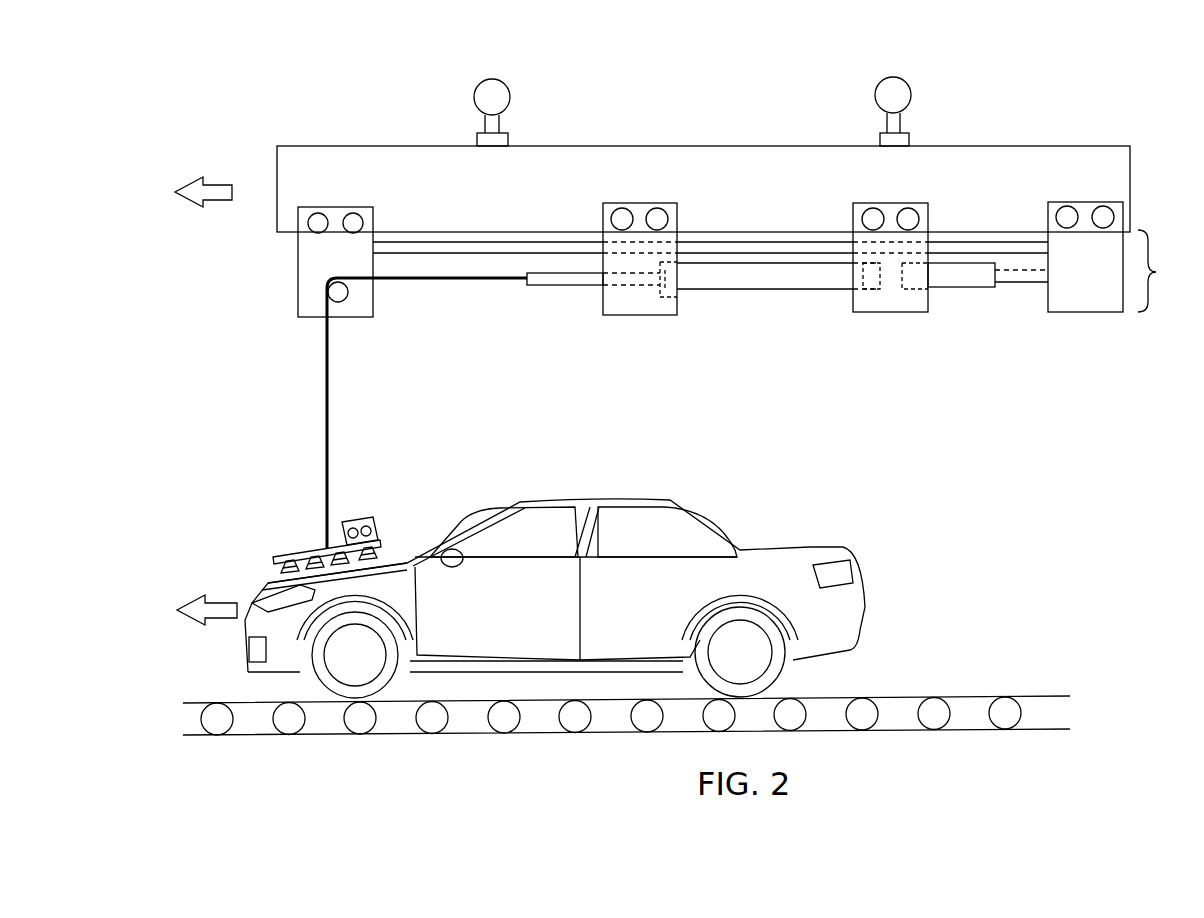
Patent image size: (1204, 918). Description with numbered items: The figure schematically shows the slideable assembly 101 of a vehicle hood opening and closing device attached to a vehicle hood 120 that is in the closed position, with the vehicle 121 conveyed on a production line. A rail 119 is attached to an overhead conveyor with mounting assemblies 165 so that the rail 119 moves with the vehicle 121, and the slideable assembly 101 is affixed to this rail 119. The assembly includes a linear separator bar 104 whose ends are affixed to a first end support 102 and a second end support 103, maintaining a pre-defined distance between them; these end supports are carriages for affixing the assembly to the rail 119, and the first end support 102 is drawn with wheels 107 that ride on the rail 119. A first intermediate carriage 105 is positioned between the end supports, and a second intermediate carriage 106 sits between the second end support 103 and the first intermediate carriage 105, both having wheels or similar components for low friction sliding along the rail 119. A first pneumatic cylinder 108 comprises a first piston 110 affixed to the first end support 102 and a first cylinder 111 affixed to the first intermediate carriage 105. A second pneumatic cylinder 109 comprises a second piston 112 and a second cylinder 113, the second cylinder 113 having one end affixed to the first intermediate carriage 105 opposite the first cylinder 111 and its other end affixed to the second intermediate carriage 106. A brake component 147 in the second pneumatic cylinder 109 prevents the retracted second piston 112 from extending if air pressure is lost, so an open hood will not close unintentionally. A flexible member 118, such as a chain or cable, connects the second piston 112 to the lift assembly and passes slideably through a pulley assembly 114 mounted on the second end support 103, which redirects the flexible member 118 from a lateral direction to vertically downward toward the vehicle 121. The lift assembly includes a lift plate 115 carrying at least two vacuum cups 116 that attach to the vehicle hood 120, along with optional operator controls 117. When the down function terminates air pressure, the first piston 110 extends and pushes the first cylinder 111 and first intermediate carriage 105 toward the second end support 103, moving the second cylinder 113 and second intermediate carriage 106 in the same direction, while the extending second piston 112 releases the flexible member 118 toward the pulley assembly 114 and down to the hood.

The slideable assembly 101 is at (1166, 271).
The first end support 102 is at (1092, 313).
The second end support 103 is at (298, 275).
The linear separator bar 104 is at (973, 242).
The first intermediate carriage 105 is at (905, 313).
The second intermediate carriage 106 is at (652, 316).
The carriage wheels 107 is at (1110, 215).
The first pneumatic cylinder 108 is at (978, 298).
The second pneumatic cylinder 109 is at (707, 296).
The first piston 110 is at (1030, 284).
The first cylinder 111 is at (946, 288).
The second piston 112 is at (545, 286).
The second cylinder 113 is at (768, 291).
The pulley assembly 114 is at (342, 302).
The lift plate 115 is at (313, 546).
The vacuum cups 116 is at (333, 578).
The operator controls 117 is at (360, 520).
The flexible member 118 is at (327, 405).
The rail 119 is at (362, 147).
The vehicle hood 120 is at (284, 560).
The vehicle 121 is at (605, 500).
The brake component 147 is at (655, 288).
The mounting assemblies 165 is at (512, 92).